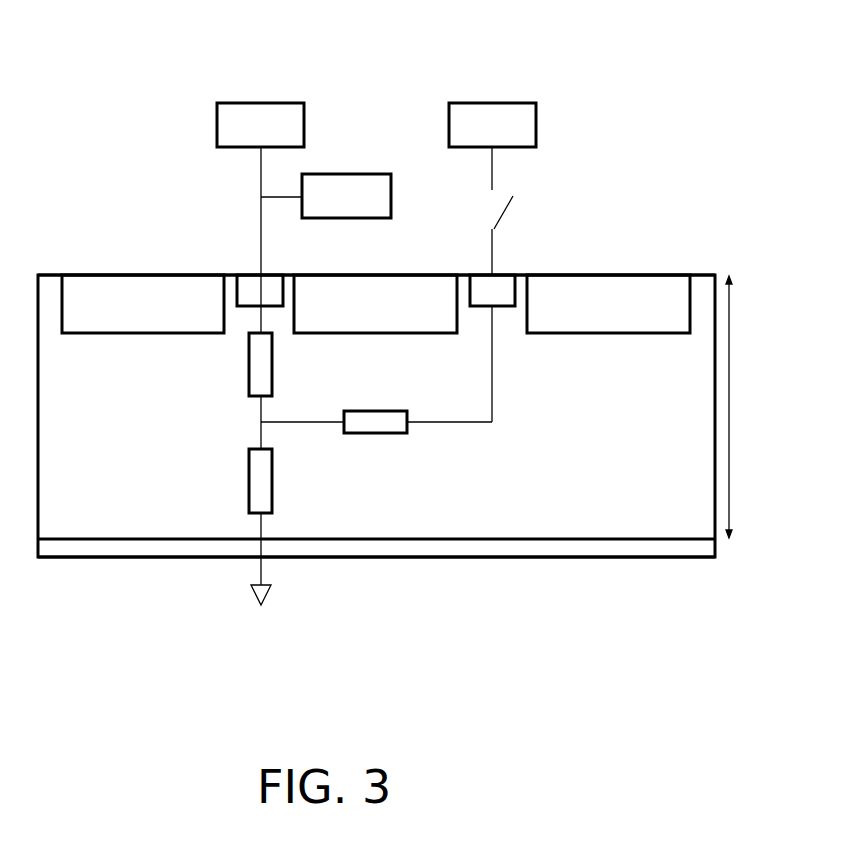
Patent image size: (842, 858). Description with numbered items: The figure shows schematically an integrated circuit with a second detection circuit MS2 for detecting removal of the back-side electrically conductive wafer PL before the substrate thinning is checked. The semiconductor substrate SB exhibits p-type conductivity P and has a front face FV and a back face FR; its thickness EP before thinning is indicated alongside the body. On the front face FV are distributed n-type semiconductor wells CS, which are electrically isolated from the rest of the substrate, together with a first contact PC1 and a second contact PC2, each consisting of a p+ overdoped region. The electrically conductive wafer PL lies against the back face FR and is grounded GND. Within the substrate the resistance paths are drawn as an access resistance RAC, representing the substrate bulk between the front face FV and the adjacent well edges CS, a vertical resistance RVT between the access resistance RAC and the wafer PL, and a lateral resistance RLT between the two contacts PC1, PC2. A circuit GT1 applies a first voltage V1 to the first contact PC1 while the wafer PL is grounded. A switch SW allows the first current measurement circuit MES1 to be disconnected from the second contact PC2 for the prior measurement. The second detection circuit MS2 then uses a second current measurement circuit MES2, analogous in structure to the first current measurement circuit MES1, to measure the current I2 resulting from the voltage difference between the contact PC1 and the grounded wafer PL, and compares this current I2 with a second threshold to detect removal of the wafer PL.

The substrate SB is at (696, 528).
The P-type region P is at (607, 515).
The back face FR is at (75, 545).
The electrically conductive wafer PL is at (394, 559).
The front face FV is at (54, 272).
The thickness of the substrate EP is at (739, 407).
The n-type semiconductor wells CS is at (132, 277).
The first contact PC1 is at (245, 277).
The second contact PC2 is at (474, 277).
The first voltage V1 is at (260, 125).
The circuit GT1 is at (262, 102).
The current I2 is at (255, 195).
The second current measurement circuit MES2 is at (346, 196).
The first current measurement circuit MES1 is at (492, 146).
The switch SW is at (507, 216).
The second detection circuit MS2 is at (400, 82).
The access resistance RAC is at (248, 375).
The vertical resistance RVT is at (248, 491).
The lateral resistance RLT is at (380, 434).
The ground GND is at (237, 564).